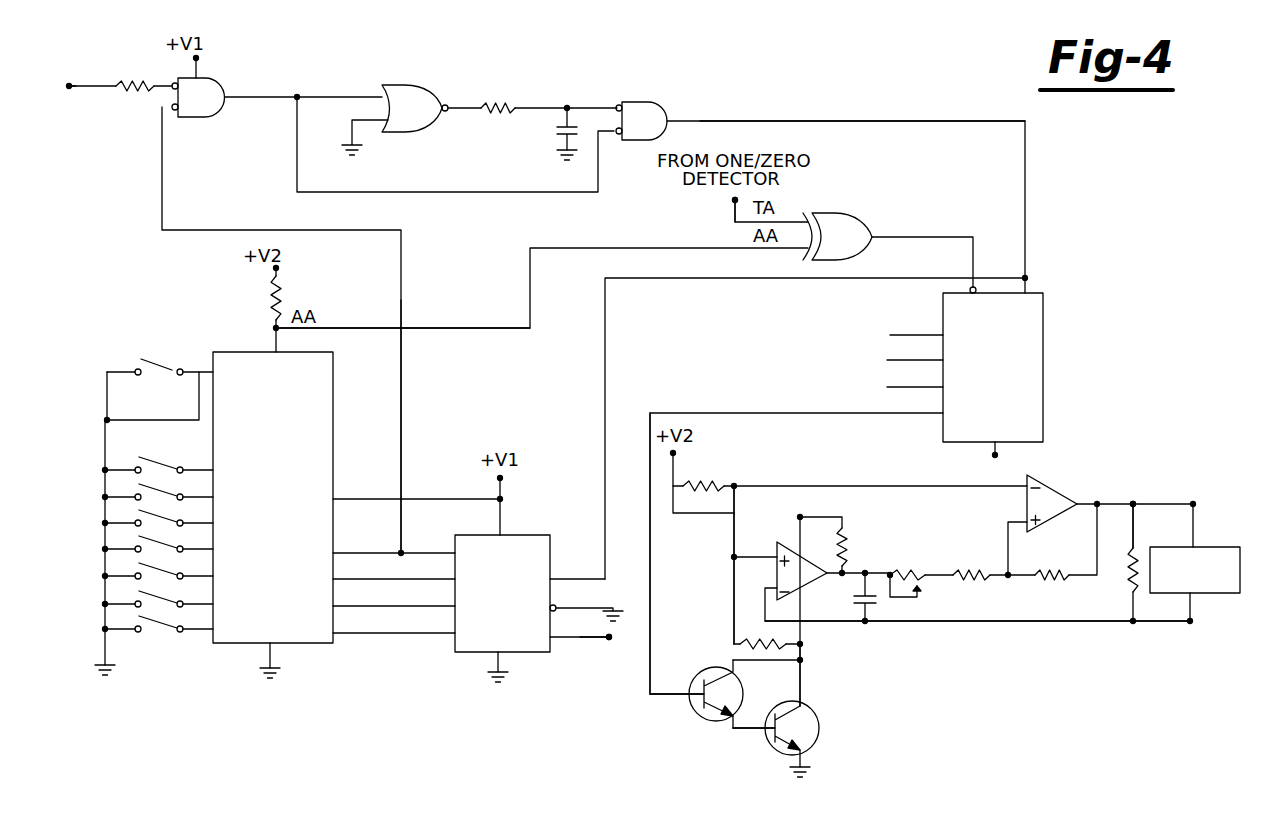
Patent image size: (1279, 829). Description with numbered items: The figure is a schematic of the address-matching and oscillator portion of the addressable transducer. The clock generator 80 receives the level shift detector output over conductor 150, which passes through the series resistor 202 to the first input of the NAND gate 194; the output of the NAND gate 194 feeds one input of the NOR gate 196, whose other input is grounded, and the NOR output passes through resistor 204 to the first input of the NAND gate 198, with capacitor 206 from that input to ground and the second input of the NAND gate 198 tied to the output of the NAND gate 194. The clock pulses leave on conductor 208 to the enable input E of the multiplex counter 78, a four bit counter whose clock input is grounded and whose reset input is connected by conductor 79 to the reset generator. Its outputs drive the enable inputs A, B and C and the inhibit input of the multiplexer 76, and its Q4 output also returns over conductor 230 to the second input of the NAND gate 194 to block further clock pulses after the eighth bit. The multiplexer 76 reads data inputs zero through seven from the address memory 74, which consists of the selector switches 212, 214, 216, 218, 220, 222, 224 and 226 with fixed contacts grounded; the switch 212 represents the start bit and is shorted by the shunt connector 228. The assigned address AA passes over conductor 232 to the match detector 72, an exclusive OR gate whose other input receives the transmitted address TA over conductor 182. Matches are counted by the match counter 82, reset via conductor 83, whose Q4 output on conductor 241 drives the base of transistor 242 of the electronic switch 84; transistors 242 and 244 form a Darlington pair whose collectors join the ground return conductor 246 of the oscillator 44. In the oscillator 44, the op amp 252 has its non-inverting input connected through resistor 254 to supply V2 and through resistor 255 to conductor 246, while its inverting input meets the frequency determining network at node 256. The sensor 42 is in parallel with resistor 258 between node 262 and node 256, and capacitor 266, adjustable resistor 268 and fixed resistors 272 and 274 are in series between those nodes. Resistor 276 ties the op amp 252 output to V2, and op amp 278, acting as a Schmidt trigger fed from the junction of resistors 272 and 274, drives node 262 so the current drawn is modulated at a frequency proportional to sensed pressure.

The clock generator 80 is at (233, 40).
The conductor 150 is at (69, 84).
The series resistor 202 is at (135, 92).
The NAND gate 194 is at (222, 80).
The NOR gate 196 is at (420, 85).
The resistor 204 is at (496, 103).
The capacitor 206 is at (560, 128).
The NAND gate 198 is at (655, 102).
The conductor 208 is at (966, 96).
The match detector 72 is at (865, 218).
The conductor 182 is at (735, 222).
The match counter 82 is at (1043, 322).
The conductor 83 is at (995, 455).
The conductor 232 is at (417, 330).
The conductor 230 is at (401, 430).
The multiplexer 76 is at (338, 362).
The address memory 74 is at (150, 350).
The selector switch 212 is at (146, 385).
The shunt connector 228 is at (150, 420).
The selector switch 214 is at (138, 456).
The selector switch 216 is at (138, 483).
The selector switch 218 is at (138, 509).
The selector switch 220 is at (138, 535).
The selector switch 222 is at (138, 562).
The selector switch 224 is at (138, 590).
The selector switch 226 is at (138, 616).
The multiplex counter 78 is at (515, 535).
The conductor 79 is at (582, 644).
The resistor 254 is at (707, 480).
The oscillator 44 is at (795, 470).
The resistor 276 is at (845, 528).
The op amp 252 is at (778, 545).
The conductor 241 is at (652, 556).
The capacitor 266 is at (862, 597).
The node 256 is at (865, 626).
The resistor 255 is at (760, 643).
The adjustable resistor 268 is at (900, 566).
The fixed resistor 272 is at (996, 522).
The fixed resistor 274 is at (1086, 545).
The op amp 278 is at (1060, 479).
The node 262 is at (1133, 503).
The sensor 42 is at (1215, 547).
The resistor 258 is at (1125, 585).
The transistor 242 is at (716, 670).
The ground return conductor 246 is at (805, 648).
The transistor 244 is at (820, 720).
The electronic switch 84 is at (690, 722).